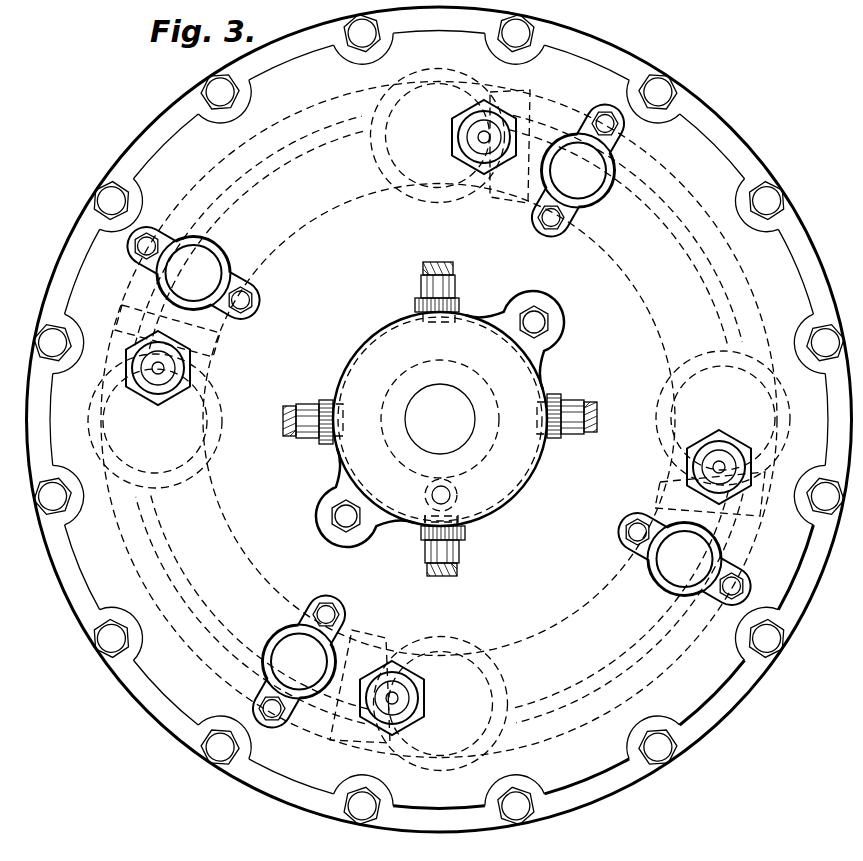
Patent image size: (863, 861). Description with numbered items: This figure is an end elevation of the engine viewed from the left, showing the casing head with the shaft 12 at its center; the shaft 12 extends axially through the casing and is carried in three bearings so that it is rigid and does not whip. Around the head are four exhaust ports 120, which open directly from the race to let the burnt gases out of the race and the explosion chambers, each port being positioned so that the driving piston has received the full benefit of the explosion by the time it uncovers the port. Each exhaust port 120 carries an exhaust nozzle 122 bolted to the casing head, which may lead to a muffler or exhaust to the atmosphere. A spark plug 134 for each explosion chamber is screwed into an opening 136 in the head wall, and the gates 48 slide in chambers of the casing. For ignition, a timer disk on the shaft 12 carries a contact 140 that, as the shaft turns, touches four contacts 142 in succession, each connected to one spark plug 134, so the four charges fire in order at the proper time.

The shaft 12 is at (418, 425).
The gates 48 is at (222, 343).
The exhaust ports 120 is at (197, 262).
The exhaust nozzle 122 is at (160, 282).
The spark plug 134 is at (190, 369).
The openings 136 is at (405, 372).
The contact 140 is at (455, 490).
The contacts 142 is at (450, 283).